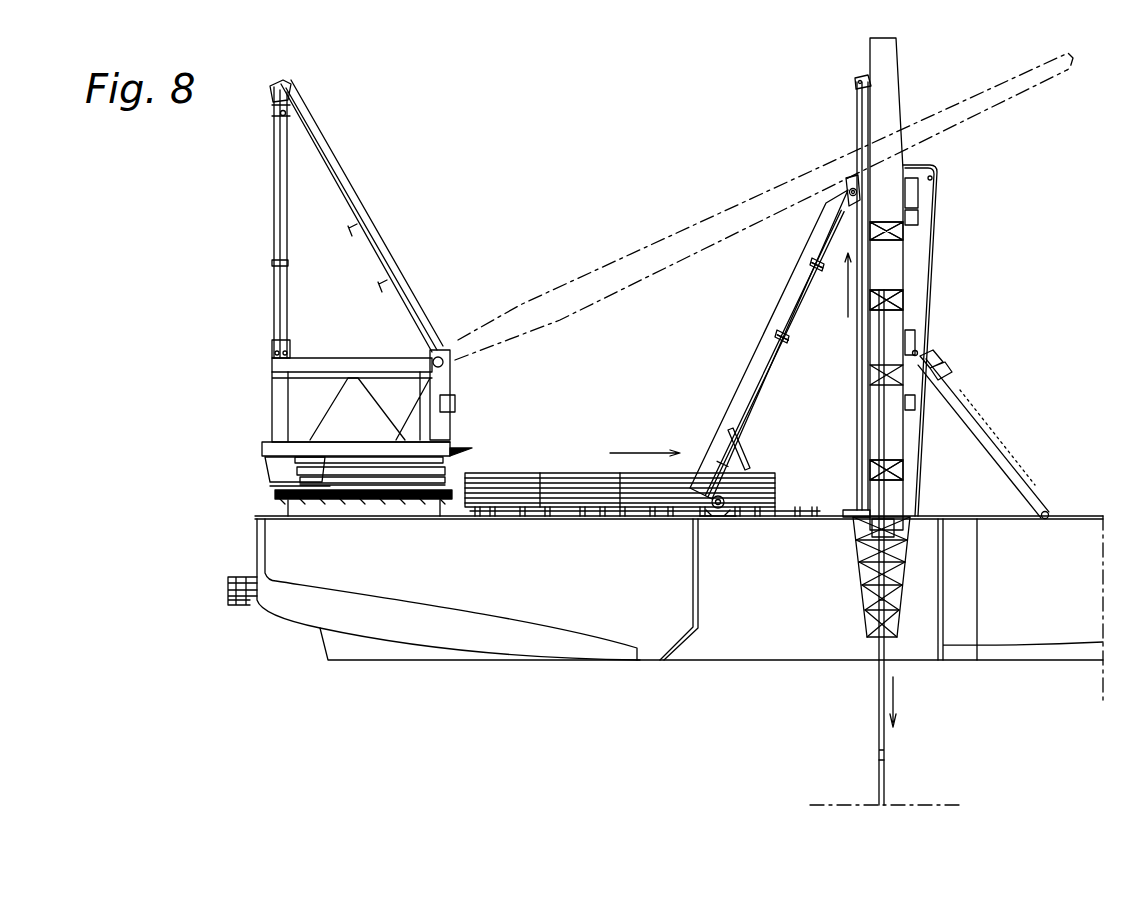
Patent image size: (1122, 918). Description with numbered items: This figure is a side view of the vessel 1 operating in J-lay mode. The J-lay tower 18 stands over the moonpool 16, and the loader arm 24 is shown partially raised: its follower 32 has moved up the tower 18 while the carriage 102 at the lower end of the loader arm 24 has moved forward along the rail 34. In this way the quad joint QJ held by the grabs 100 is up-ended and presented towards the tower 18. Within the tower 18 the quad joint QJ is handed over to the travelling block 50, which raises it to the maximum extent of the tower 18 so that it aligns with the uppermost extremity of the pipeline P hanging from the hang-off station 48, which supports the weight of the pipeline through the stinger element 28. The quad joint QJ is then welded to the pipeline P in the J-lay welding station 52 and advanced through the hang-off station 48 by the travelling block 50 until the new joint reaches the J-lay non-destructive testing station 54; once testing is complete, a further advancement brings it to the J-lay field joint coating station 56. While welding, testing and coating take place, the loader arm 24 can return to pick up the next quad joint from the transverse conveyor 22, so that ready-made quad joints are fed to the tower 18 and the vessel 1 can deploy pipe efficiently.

The vessel 1 is at (1050, 166).
The moonpool 16 is at (805, 610).
The J-lay tower 18 is at (905, 268).
The transverse conveyor 22 is at (506, 473).
The loader arm 24 is at (762, 356).
The stinger element 28 is at (866, 600).
The follower 32 is at (848, 182).
The rail 34 is at (516, 518).
The hang-off station 48 is at (873, 540).
The travelling block 50 is at (900, 228).
The J-lay welding station 52 is at (900, 300).
The J-lay non-destructive testing station 54 is at (905, 382).
The J-lay field joint coating station 56 is at (900, 473).
The grabs 100 is at (770, 395).
The carriage 102 is at (720, 519).
The pipeline P is at (884, 768).
The quad joint QJ is at (795, 343).